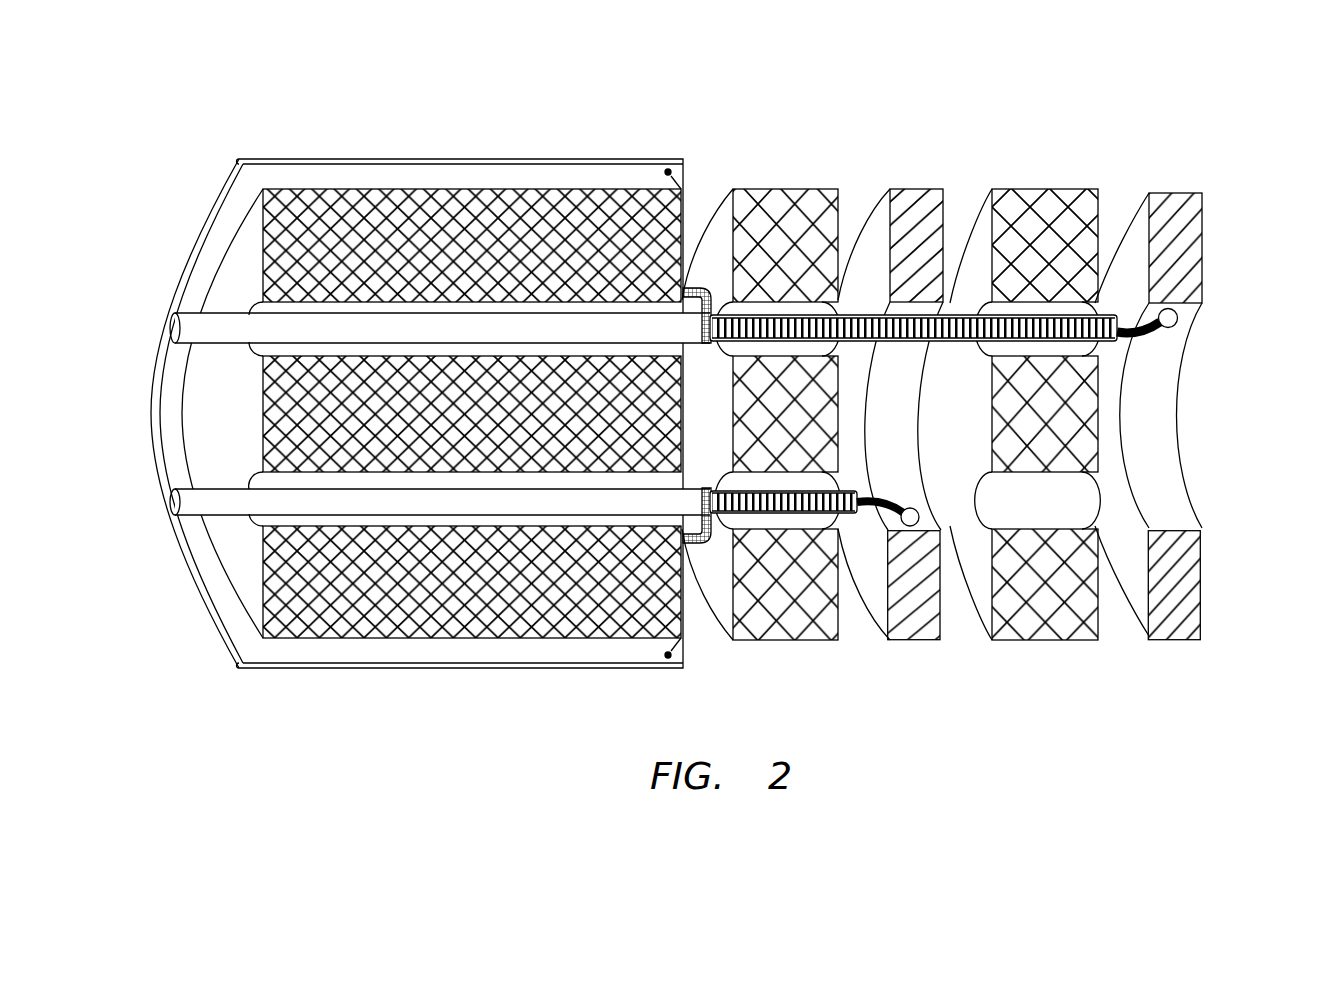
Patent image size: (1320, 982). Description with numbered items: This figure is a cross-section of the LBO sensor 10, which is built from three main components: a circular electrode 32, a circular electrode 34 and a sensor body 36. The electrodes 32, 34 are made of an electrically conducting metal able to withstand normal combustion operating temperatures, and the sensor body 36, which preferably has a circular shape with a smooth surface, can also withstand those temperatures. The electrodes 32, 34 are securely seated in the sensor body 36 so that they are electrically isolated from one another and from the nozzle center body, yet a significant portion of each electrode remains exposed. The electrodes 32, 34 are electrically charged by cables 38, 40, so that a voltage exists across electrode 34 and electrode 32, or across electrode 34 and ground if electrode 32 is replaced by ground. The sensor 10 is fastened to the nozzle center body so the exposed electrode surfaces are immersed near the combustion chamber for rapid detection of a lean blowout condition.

The LBO sensor 10 is at (492, 95).
The circular electrode 32 is at (918, 190).
The circular electrode 34 is at (1178, 190).
The sensor body 36 is at (787, 190).
The cable 38 is at (917, 523).
The cable 40 is at (1175, 327).